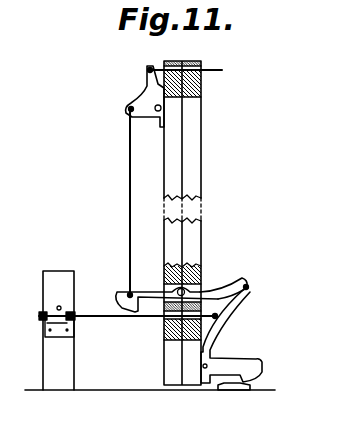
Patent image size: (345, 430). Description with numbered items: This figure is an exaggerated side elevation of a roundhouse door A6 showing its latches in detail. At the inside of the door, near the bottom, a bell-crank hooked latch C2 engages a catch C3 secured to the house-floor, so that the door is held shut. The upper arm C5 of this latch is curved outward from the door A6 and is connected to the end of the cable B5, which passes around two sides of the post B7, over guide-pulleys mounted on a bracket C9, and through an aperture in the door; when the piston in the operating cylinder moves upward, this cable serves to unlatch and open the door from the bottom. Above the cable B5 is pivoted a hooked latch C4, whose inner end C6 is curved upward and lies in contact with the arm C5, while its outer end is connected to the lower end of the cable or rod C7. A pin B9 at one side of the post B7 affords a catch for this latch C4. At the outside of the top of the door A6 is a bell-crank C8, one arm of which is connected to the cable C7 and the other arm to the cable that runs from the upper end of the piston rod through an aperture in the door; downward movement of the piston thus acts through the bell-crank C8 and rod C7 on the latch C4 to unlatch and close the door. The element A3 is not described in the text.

The rod A3 is at (222, 71).
The door A6 is at (198, 157).
The bell-crank C8 is at (146, 89).
The cable or rod C7 is at (129, 193).
The hooked latch C4 is at (118, 292).
The inner end of hooked latch C6 is at (232, 282).
The upper arm C5 is at (249, 287).
The bell-crank hooked latch C2 is at (242, 364).
The catch C3 is at (238, 386).
The post B7 is at (43, 279).
The pin B9 is at (56, 308).
The cable B5 is at (111, 318).
The bracket C9 is at (50, 334).